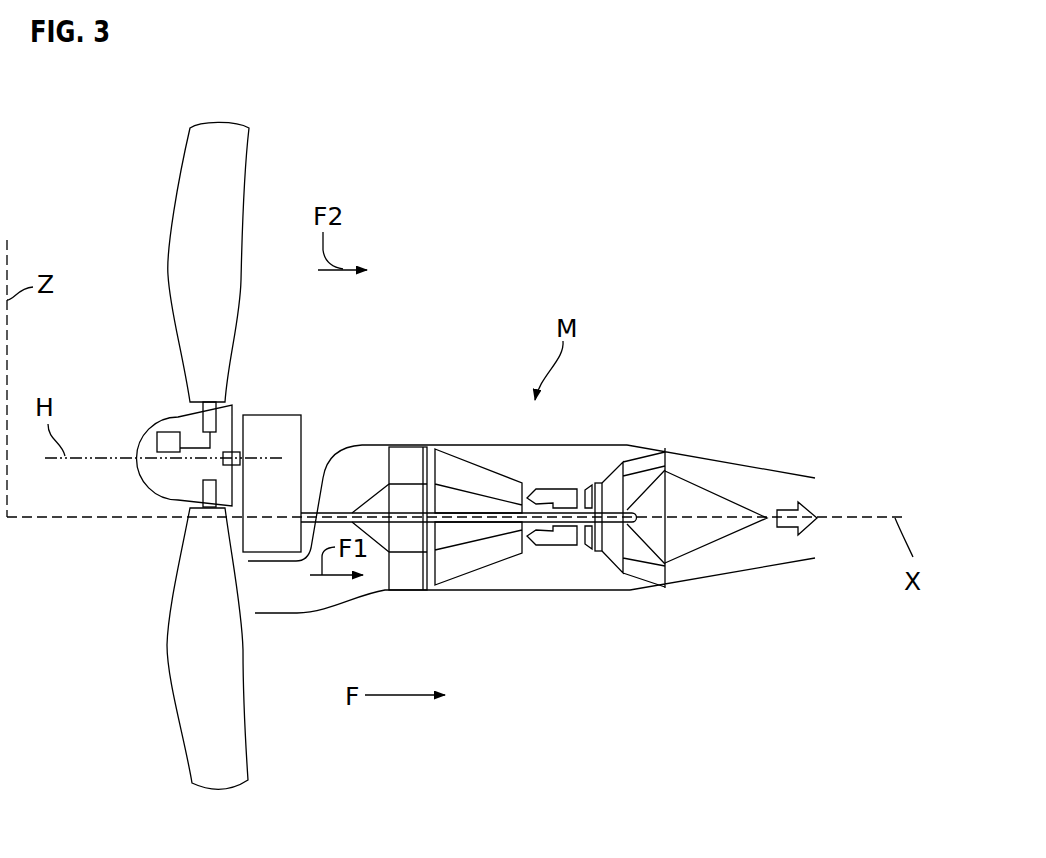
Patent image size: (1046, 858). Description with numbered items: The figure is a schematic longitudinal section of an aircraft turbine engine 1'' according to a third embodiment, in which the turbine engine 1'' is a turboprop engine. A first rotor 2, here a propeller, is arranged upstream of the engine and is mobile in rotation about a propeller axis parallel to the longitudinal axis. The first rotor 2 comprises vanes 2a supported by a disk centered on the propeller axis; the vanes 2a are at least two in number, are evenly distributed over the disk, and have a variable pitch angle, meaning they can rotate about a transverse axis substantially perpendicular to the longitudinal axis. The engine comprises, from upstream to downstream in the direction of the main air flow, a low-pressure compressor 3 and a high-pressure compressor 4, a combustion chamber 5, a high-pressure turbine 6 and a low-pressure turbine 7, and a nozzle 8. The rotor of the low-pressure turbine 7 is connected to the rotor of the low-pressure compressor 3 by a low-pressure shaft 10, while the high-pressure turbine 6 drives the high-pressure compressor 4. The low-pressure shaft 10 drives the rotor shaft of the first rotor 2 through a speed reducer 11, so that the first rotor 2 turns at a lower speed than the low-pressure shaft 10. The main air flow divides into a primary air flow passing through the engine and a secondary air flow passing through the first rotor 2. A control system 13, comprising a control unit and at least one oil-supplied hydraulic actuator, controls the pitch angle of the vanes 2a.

The turbine engine 1'' is at (442, 439).
The first rotor 2 is at (172, 200).
The vanes 2a is at (178, 297).
The low-pressure compressor 3 is at (406, 458).
The high-pressure compressor 4 is at (470, 468).
The combustion chamber 5 is at (550, 497).
The high-pressure turbine 6 is at (621, 563).
The low-pressure turbine 7 is at (728, 477).
The nozzle 8 is at (814, 495).
The low-pressure shaft 10 is at (636, 525).
The speed reducer 11 is at (291, 415).
The control system 13 is at (158, 438).